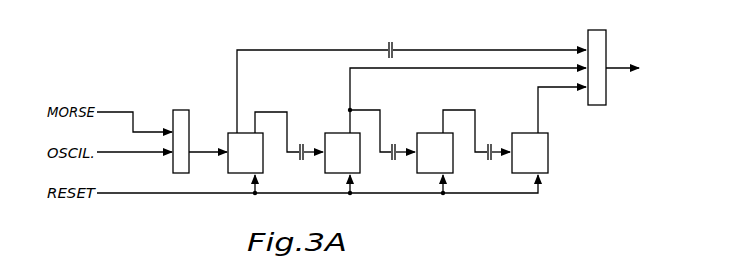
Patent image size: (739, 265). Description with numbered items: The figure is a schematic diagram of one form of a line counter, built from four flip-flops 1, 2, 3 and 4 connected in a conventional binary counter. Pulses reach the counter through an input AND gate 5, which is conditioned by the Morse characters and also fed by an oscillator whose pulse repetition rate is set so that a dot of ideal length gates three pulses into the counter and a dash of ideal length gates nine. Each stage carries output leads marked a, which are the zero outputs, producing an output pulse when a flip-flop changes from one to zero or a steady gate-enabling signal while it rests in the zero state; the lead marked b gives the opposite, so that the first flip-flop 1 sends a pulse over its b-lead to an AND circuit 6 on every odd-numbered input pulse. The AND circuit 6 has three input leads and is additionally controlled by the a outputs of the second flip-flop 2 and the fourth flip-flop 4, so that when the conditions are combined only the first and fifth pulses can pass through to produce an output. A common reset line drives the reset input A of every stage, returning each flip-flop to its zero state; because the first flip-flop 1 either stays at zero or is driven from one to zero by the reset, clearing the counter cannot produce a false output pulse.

The first flip-flop 1 is at (224, 164).
The second flip-flop 2 is at (322, 165).
The third flip-flop 3 is at (413, 165).
The fourth flip-flop 4 is at (508, 165).
The input AND gate 5 is at (190, 108).
The AND circuit 6 is at (602, 93).
The 0 output lead a is at (257, 122).
The 1 output lead b is at (238, 69).
The reset input A is at (258, 187).